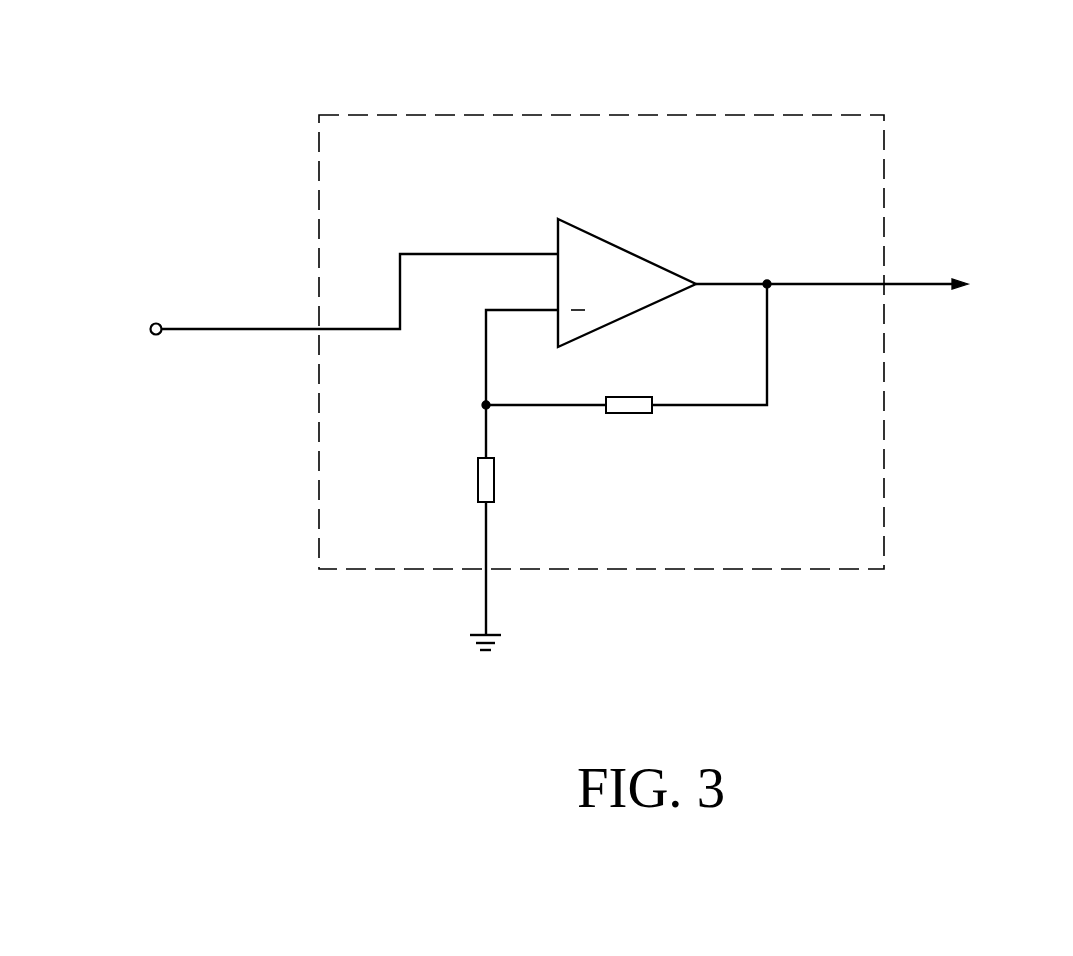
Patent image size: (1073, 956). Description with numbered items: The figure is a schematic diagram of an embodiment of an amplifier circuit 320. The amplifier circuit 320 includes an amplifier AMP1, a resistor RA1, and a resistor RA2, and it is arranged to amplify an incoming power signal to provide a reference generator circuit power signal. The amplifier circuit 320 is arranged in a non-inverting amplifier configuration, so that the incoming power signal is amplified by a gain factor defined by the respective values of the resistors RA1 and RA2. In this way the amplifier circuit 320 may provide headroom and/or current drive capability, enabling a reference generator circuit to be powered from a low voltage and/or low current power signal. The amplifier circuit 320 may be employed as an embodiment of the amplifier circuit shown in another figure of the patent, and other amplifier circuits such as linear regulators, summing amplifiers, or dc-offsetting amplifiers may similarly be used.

The amplifier circuit 320 is at (851, 62).
The amplifier AMP1 is at (591, 312).
The resistor RA1 is at (624, 366).
The resistor RA2 is at (510, 520).